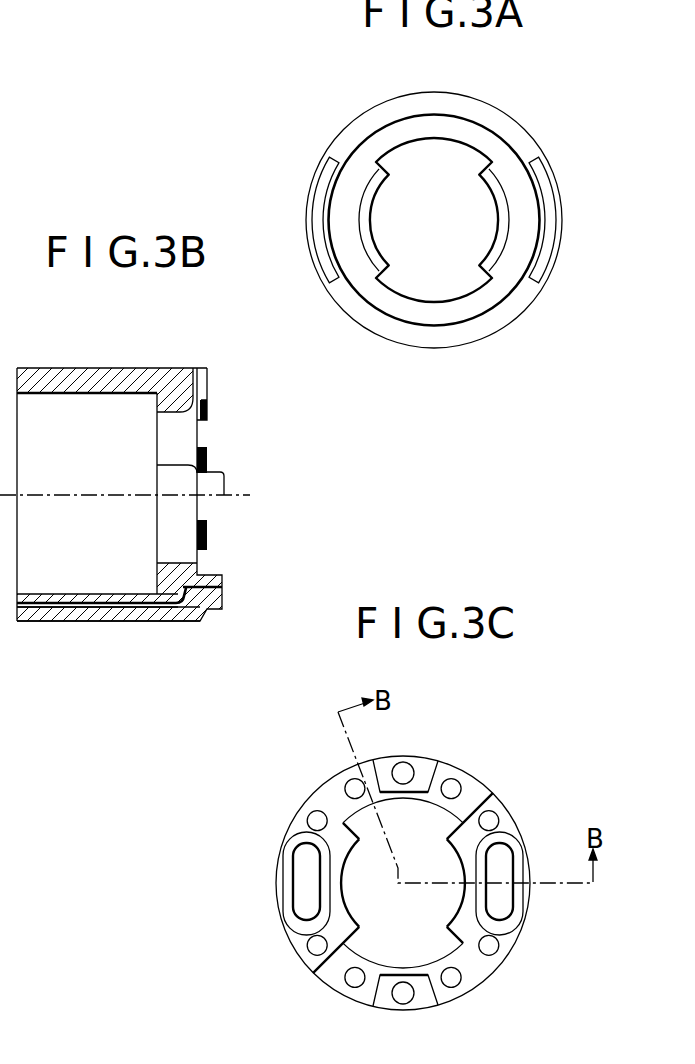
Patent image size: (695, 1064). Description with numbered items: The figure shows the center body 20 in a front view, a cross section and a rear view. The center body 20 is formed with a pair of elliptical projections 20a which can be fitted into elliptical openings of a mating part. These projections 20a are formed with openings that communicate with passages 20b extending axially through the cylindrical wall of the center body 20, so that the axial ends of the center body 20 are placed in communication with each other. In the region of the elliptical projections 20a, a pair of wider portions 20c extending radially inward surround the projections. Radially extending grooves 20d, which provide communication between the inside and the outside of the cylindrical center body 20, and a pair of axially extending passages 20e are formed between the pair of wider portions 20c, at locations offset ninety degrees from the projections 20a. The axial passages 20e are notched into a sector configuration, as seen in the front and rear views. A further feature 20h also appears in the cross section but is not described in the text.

In FIG. 3A, the center body 20 is at (494, 105).
In FIG. 3B, the center body 20 is at (112, 365).
In FIG. 3C, the center body 20 is at (428, 737).
In FIG. 3B, the elliptical projections 20a is at (224, 583).
In FIG. 3C, the elliptical projections 20a is at (284, 897).
In FIG. 3A, the passages 20b is at (320, 221).
In FIG. 3B, the passages 20b is at (116, 612).
In FIG. 3A, the wider portions 20c is at (503, 222).
In FIG. 3B, the wider portions 20c is at (246, 465).
In FIG. 3C, the wider portions 20c is at (468, 847).
In FIG. 3B, the radially extending grooves 20d is at (203, 389).
In FIG. 3C, the radially extending grooves 20d is at (441, 767).
In FIG. 3A, the axially extending passages 20e is at (470, 158).
In FIG. 3B, the axially extending passages 20e is at (161, 431).
In FIG. 3C, the axially extending passages 20e is at (444, 811).
In FIG. 3B, the hole 20h is at (195, 543).